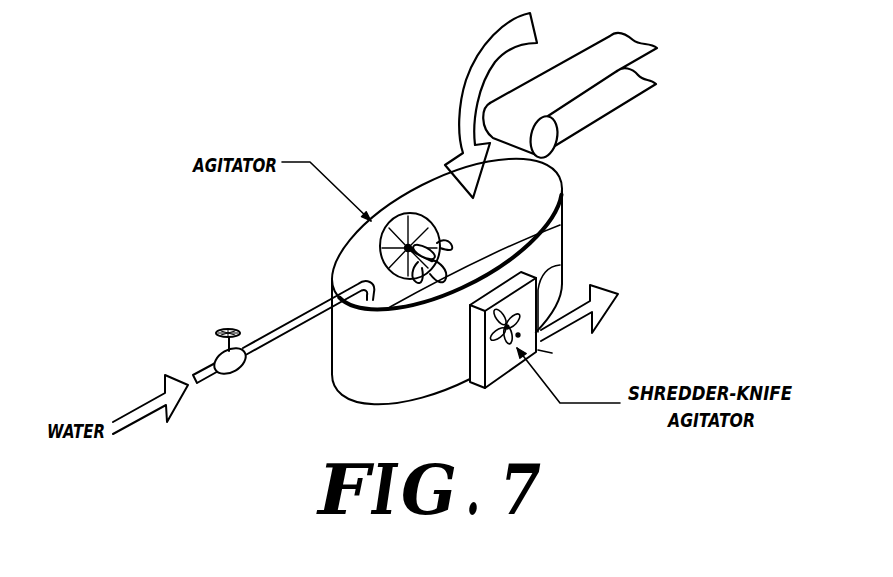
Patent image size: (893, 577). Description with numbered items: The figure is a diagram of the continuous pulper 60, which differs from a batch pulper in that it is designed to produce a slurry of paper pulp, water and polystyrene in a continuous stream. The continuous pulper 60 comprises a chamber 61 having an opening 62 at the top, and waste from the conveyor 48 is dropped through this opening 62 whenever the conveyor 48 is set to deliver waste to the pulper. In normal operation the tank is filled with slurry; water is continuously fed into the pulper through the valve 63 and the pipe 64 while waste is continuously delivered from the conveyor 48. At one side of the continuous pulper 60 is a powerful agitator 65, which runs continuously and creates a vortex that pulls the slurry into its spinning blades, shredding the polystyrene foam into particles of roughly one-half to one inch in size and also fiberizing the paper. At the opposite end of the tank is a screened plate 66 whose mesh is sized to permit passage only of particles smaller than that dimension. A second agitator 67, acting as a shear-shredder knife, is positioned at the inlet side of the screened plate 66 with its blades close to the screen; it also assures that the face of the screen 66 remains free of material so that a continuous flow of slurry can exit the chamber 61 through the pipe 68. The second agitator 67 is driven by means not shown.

The conveyor 48 is at (605, 117).
The continuous pulper 60 is at (286, 63).
The chamber 61 is at (563, 238).
The opening 62 is at (563, 179).
The valve 63 is at (241, 368).
The pipe 64 is at (300, 316).
The agitator 65 is at (447, 240).
The screened plate 66 is at (500, 368).
The second agitator 67 is at (560, 265).
The pipe 68 is at (568, 327).